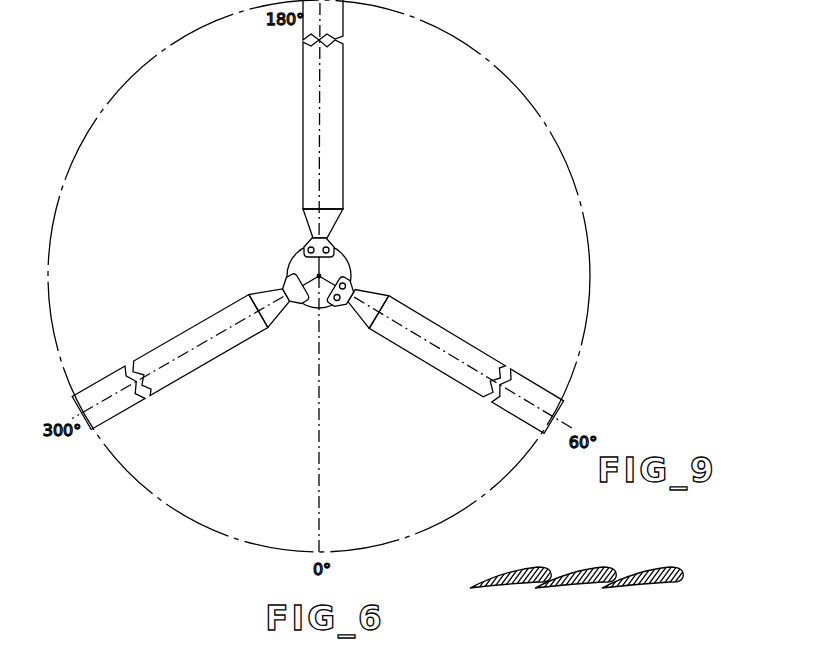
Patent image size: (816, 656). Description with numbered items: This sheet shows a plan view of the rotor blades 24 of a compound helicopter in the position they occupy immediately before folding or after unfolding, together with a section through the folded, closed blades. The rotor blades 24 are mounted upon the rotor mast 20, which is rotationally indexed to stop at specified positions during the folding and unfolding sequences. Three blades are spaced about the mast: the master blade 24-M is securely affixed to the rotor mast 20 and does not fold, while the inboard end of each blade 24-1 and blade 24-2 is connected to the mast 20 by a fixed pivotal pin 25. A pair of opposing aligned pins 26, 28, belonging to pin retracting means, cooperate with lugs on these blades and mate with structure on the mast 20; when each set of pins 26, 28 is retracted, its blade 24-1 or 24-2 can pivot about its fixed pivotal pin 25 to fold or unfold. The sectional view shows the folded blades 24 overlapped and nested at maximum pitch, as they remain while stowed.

In FIG. 6, the rotor mast 20 is at (292, 268).
In FIG. 9, the rotor blades 24 is at (580, 564).
In FIG. 6, the blade 24-1 is at (462, 348).
In FIG. 9, the blade 24-1 is at (648, 584).
In FIG. 6, the blade 24-2 is at (336, 108).
In FIG. 9, the blade 24-2 is at (522, 584).
In FIG. 6, the master blade 24-M is at (172, 342).
In FIG. 9, the master blade 24-M is at (583, 568).
In FIG. 6, the fixed pivotal pin 25 is at (307, 250).
In FIG. 6, the pin 26 is at (331, 251).
In FIG. 6, the pin 28 is at (346, 286).